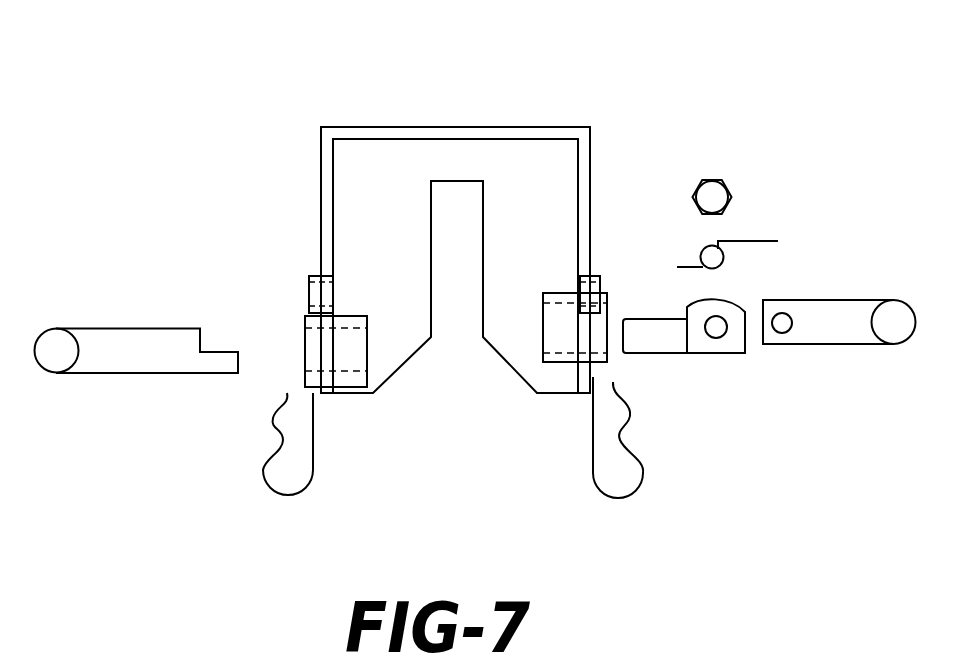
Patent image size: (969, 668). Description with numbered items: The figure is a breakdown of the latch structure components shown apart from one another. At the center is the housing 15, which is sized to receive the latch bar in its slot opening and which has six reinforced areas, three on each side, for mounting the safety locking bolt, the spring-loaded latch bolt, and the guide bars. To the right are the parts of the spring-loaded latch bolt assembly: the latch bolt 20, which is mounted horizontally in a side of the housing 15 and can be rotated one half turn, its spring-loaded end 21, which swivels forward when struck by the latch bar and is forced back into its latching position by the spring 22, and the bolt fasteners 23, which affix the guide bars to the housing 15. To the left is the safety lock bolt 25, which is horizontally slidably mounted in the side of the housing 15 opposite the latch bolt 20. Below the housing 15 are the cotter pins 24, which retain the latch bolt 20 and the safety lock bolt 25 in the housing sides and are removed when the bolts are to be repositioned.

The housing 15 is at (477, 128).
The spring-loaded latch bolt 20 is at (800, 344).
The spring-loaded end 21 is at (683, 353).
The spring 22 is at (743, 242).
The bolt fasteners 23 is at (703, 178).
The cotter pin 24 is at (270, 502).
The safety lock bolt 25 is at (155, 328).